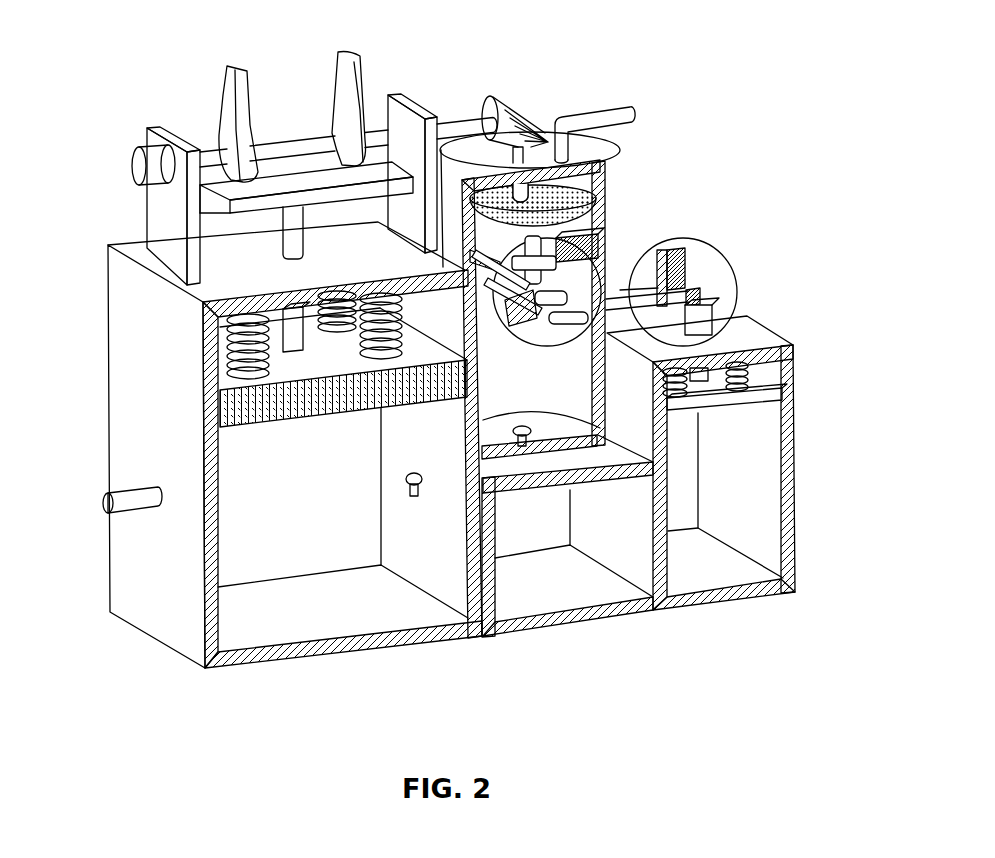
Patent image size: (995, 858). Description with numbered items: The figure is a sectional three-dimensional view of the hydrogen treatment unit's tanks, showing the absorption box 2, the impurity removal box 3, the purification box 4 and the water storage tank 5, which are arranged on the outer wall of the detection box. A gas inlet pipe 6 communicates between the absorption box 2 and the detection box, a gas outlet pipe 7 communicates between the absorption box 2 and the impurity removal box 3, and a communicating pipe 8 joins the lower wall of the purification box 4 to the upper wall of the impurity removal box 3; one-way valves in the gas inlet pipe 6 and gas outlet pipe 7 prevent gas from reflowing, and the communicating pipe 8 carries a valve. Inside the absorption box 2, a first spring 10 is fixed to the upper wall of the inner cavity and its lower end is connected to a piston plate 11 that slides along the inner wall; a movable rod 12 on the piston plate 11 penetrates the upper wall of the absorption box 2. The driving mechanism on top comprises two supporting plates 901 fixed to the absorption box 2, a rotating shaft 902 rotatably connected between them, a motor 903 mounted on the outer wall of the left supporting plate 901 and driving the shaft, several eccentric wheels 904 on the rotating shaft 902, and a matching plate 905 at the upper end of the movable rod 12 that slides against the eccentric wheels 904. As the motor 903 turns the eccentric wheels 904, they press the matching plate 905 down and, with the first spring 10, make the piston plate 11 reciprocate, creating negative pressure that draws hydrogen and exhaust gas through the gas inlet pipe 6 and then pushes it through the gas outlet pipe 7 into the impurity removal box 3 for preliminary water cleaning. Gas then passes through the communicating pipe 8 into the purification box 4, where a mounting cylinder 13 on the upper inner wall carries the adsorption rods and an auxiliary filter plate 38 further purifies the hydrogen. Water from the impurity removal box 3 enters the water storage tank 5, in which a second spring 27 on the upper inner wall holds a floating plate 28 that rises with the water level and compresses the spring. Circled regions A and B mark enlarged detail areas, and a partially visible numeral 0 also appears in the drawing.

The absorption box 2 is at (150, 332).
The impurity removal box 3 is at (520, 592).
The purification box 4 is at (624, 114).
The water storage tank 5 is at (735, 572).
The gas inlet pipe 6 is at (137, 504).
The gas outlet pipe 7 is at (412, 492).
The communicating pipe 8 is at (531, 443).
The first spring 10 is at (240, 356).
The piston plate 11 is at (265, 383).
The movable rod 12 is at (297, 336).
The mounting cylinder 13 is at (523, 196).
The second spring 27 is at (742, 357).
The floating plate 28 is at (748, 407).
The auxiliary filter plate 38 is at (600, 192).
The supporting plates 901 is at (176, 240).
The rotating shaft 902 is at (453, 122).
The motor 903 is at (162, 162).
The eccentric wheels 904 is at (357, 92).
The matching plate 905 is at (284, 178).
The detail region A is at (612, 247).
The detail region B is at (736, 270).
The unidentified numeral 0 is at (652, 596).